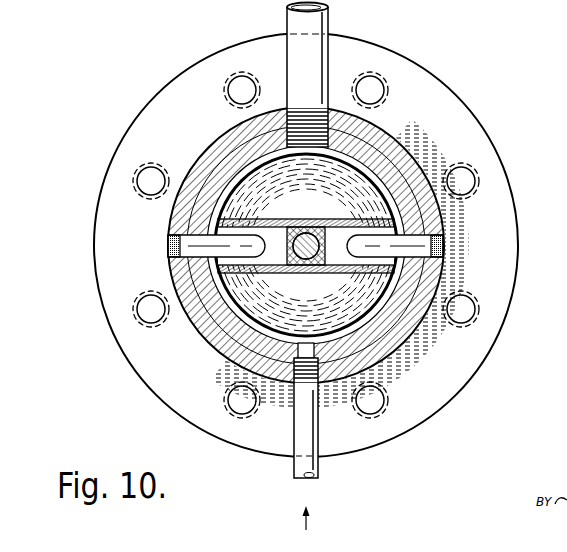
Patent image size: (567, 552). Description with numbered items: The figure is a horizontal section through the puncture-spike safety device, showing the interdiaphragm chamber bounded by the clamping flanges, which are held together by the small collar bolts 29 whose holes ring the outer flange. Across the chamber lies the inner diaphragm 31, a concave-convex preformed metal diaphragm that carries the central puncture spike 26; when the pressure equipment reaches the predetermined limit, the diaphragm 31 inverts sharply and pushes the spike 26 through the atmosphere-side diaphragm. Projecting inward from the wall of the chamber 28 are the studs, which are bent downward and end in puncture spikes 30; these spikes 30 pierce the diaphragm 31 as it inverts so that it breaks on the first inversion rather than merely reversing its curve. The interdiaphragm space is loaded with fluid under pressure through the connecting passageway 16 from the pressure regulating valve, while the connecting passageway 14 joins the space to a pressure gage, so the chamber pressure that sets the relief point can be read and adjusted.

The connecting passageway 14 is at (329, 25).
The connecting passageway 16 is at (318, 467).
The puncture spike 26 is at (317, 220).
The chamber bore 28 is at (357, 308).
The small collar bolts 29 is at (377, 90).
The puncture spikes 30 is at (178, 240).
The inner diaphragm 31 is at (236, 172).